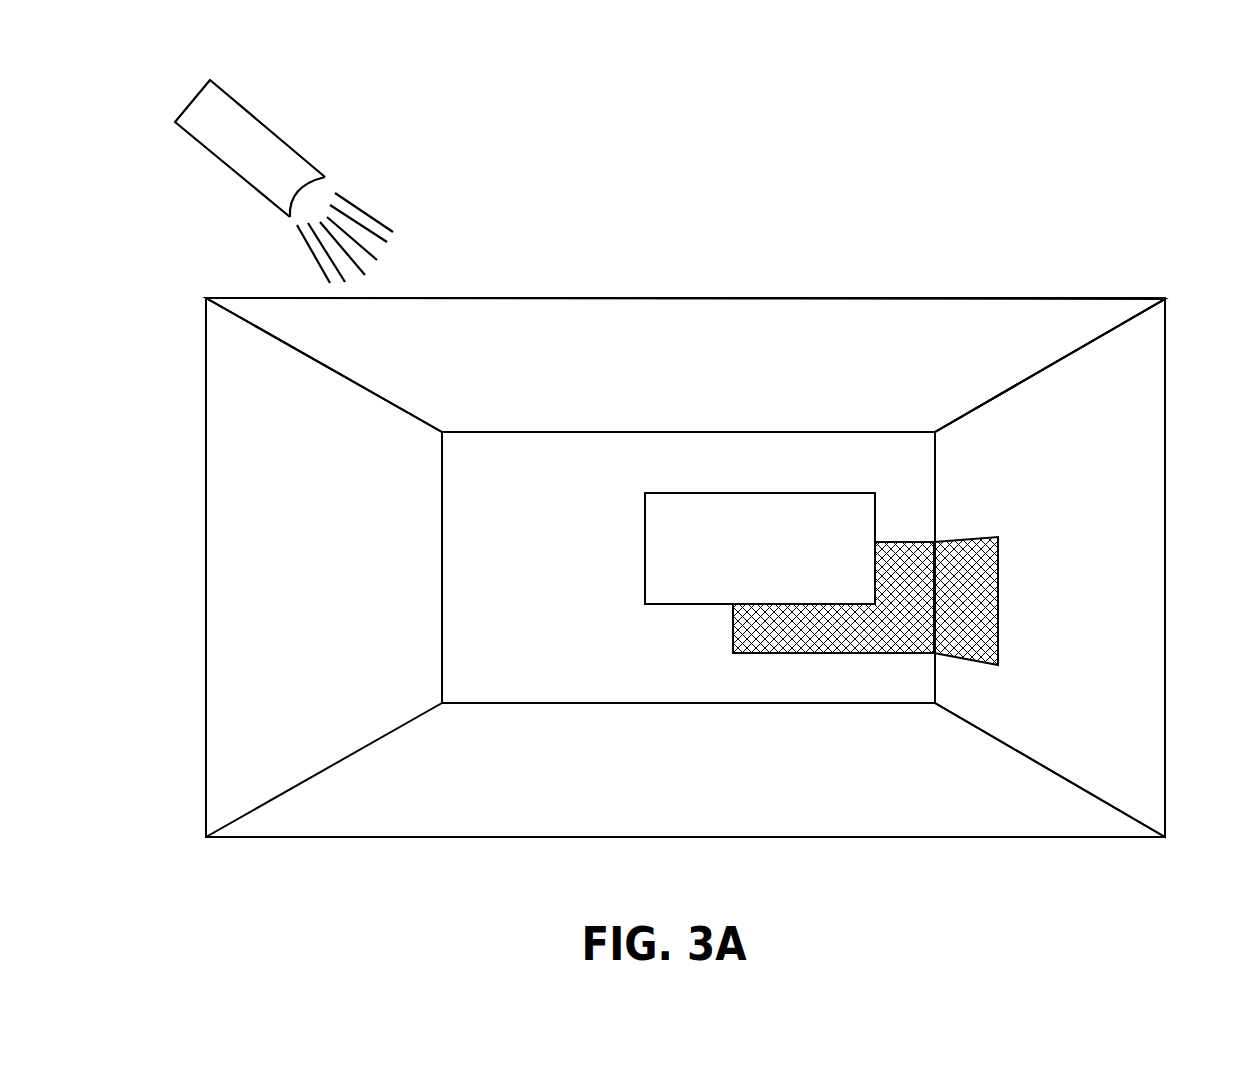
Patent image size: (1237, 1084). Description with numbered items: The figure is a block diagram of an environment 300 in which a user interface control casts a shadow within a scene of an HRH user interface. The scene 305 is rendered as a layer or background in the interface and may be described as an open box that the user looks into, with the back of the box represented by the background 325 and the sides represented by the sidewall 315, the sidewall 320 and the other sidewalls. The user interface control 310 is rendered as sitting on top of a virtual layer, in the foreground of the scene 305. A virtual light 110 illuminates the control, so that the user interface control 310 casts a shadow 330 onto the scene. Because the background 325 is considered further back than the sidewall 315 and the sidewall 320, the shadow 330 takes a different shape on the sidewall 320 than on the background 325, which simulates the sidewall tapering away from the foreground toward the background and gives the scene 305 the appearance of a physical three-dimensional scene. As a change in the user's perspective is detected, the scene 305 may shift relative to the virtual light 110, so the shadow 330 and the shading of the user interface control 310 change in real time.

The virtual light 110 is at (258, 141).
The environment 300 is at (1169, 100).
The scene 305 is at (862, 289).
The user interface control 310 is at (739, 590).
The sidewall 315 is at (649, 387).
The sidewall 320 is at (1049, 507).
The background 325 is at (532, 570).
The shadow 330 is at (886, 648).